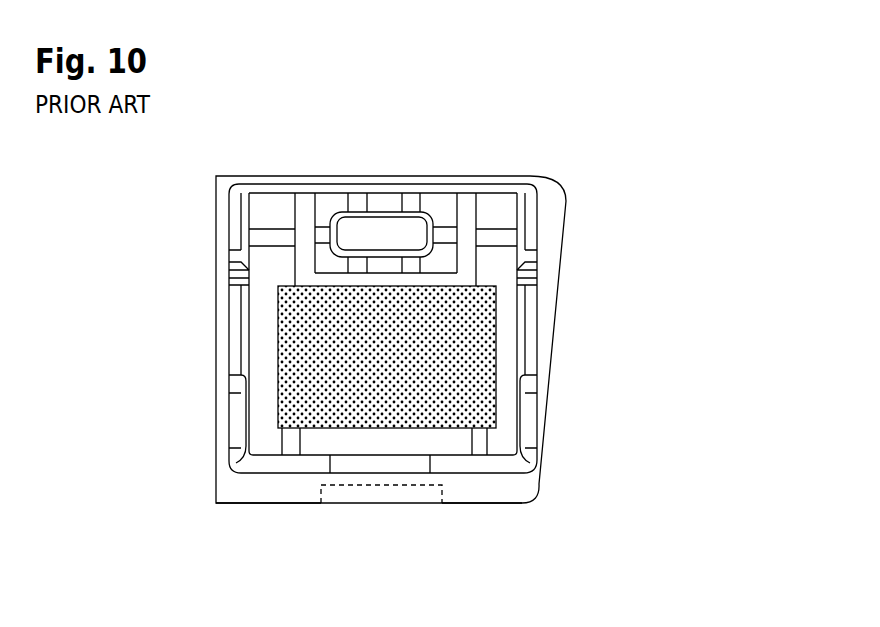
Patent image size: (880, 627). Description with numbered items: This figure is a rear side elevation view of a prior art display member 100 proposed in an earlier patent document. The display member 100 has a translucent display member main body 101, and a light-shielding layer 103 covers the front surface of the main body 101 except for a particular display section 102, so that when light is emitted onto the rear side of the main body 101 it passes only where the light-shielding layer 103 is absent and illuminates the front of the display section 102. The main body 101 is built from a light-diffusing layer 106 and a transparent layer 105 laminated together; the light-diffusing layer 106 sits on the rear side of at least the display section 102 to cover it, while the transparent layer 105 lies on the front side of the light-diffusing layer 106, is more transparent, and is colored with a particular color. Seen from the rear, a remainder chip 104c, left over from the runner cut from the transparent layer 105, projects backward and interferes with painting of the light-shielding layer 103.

The display member 100 is at (540, 133).
The display member main body 101 is at (550, 307).
The particular display section 102 is at (381, 230).
The light-shielding layer 103 is at (275, 493).
The remainder chip 104c is at (375, 493).
The transparent layer 105 is at (503, 493).
The light-diffusing layer 106 is at (502, 462).